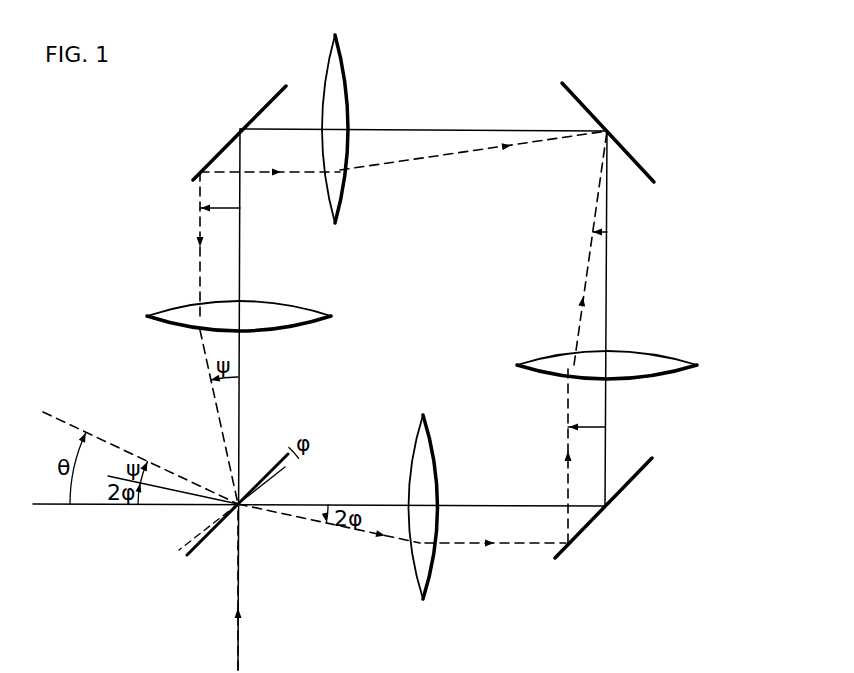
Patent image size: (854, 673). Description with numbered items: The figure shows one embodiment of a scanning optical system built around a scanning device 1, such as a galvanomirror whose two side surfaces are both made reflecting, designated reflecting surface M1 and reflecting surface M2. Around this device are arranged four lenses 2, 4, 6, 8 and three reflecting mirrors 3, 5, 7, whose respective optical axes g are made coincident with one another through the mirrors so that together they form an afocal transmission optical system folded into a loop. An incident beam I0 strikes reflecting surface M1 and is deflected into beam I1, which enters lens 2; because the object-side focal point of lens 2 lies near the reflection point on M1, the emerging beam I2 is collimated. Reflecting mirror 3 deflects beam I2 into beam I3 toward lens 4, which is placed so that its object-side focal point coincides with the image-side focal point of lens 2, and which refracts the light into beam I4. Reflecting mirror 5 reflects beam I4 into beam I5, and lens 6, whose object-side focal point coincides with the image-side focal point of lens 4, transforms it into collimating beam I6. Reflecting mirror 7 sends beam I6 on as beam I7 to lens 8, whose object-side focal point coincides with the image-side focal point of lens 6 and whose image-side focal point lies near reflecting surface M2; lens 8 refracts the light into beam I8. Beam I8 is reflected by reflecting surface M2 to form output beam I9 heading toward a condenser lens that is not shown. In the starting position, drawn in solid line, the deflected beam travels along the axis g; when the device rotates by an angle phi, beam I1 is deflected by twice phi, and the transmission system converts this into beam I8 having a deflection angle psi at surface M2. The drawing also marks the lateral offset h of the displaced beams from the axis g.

The scanning device 1 is at (190, 557).
The lens 2 is at (429, 580).
The reflecting mirror 3 is at (644, 467).
The lens 4 is at (676, 352).
The reflecting mirror 5 is at (622, 145).
The lens 6 is at (343, 63).
The reflecting mirror 7 is at (266, 104).
The lens 8 is at (167, 308).
The reflecting surface M1 is at (281, 470).
The reflecting surface M2 is at (263, 470).
The incident beam I0 is at (241, 626).
The beam I1 is at (360, 532).
The collimating beam I2 is at (517, 547).
The beam I3 is at (567, 427).
The beam I4 is at (588, 254).
The beam I5 is at (461, 157).
The collimating beam I6 is at (292, 174).
The beam I7 is at (199, 222).
The beam I8 is at (215, 402).
The beam I9 is at (117, 445).
The optical axis g is at (445, 129).
The beam offset h is at (402, 308).